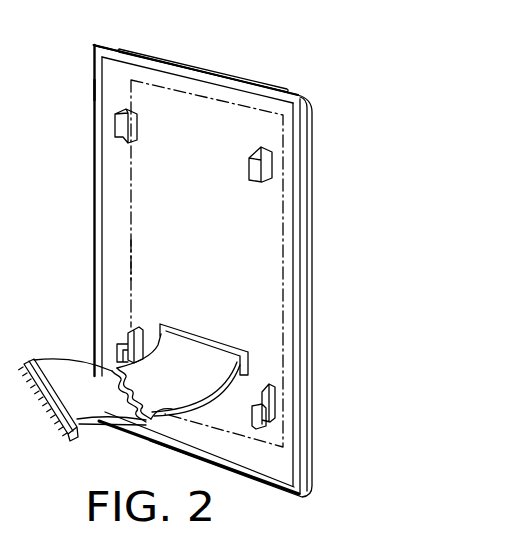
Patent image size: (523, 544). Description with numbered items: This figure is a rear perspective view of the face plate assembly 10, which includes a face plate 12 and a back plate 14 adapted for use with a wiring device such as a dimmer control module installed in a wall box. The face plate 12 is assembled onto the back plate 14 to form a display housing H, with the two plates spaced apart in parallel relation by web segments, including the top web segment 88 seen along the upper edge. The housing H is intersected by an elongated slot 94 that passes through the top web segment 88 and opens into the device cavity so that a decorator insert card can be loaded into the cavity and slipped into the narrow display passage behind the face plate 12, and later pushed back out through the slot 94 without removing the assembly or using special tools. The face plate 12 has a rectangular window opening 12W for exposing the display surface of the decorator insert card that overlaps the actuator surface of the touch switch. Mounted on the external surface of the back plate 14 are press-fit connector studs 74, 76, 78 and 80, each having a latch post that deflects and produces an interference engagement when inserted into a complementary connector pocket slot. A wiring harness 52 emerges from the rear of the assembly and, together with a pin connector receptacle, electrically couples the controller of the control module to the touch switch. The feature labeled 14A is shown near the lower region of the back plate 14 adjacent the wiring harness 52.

The face plate assembly 10 is at (309, 62).
The face plate 12 is at (316, 233).
The rectangular window opening 12W is at (131, 260).
The back plate 14 is at (114, 186).
The bracket 14A is at (197, 338).
The wiring harness 52 is at (186, 375).
The press-fit connector stud 74 is at (262, 172).
The press-fit connector stud 76 is at (272, 398).
The press-fit connector stud 78 is at (127, 331).
The press-fit connector stud 80 is at (114, 128).
The top web segment 88 is at (102, 43).
The elongated slot 94 is at (199, 68).
The display housing H is at (88, 89).